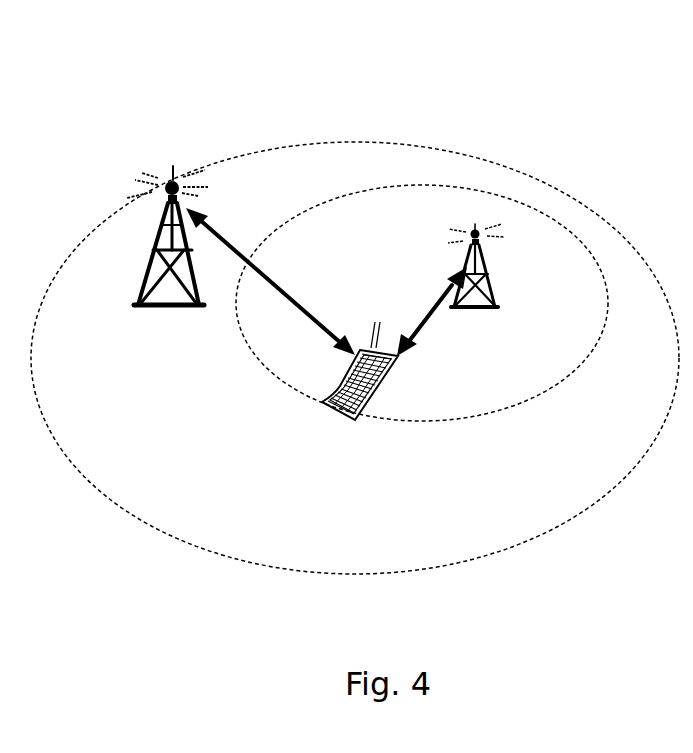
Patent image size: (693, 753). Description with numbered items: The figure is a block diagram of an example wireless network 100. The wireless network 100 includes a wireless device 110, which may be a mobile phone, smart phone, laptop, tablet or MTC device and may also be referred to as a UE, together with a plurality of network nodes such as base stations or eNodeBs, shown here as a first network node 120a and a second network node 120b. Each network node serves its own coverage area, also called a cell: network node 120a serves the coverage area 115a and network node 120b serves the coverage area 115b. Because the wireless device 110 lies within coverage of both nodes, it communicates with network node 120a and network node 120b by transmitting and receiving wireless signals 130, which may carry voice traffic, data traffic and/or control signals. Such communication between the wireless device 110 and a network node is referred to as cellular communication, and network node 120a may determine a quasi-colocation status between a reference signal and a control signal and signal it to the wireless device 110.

The wireless network 100 is at (326, 100).
The wireless device 110 is at (343, 420).
The coverage area 115a is at (355, 358).
The coverage area 115b is at (422, 303).
The network node 120a is at (160, 256).
The network node 120b is at (463, 254).
The wireless signals 130 is at (326, 283).